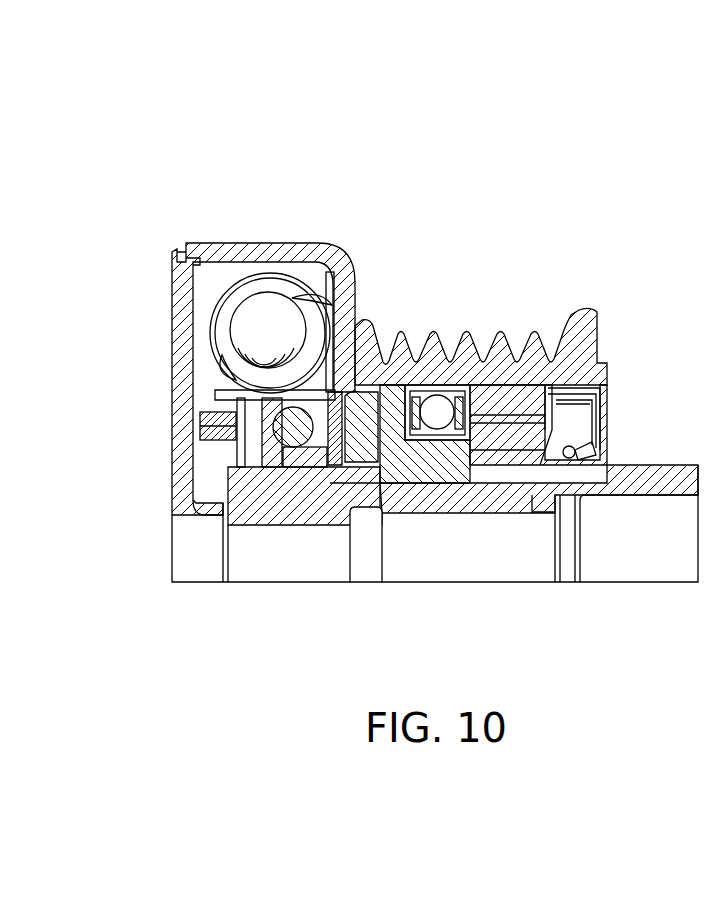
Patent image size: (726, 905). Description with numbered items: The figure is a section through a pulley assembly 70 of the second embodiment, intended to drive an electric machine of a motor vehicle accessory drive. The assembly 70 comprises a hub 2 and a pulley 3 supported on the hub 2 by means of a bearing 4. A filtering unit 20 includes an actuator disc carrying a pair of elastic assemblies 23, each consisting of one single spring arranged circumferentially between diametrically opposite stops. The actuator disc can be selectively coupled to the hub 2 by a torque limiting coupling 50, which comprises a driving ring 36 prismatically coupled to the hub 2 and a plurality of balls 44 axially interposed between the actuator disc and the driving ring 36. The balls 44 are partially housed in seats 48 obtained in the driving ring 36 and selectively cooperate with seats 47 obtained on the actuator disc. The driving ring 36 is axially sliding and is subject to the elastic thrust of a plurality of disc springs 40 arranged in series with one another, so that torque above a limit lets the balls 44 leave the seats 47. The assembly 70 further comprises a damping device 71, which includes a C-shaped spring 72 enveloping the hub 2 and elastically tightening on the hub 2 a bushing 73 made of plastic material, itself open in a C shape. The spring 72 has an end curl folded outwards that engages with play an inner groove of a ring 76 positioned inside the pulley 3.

The pulley assembly 70 is at (393, 380).
The elastic assemblies 23 is at (229, 285).
The pulley 3 is at (357, 265).
The filtering unit 20 is at (338, 343).
The seats 47 is at (345, 356).
The disc springs 40 is at (415, 380).
The ring 76 is at (518, 395).
The damping device 71 is at (565, 416).
The balls 44 is at (205, 422).
The seats 48 is at (225, 505).
The torque limiting coupling 50 is at (288, 446).
The driving ring 36 is at (312, 468).
The bearing 4 is at (445, 428).
The C-shaped spring 72 is at (503, 483).
The hub 2 is at (505, 513).
The bushing 73 is at (535, 465).